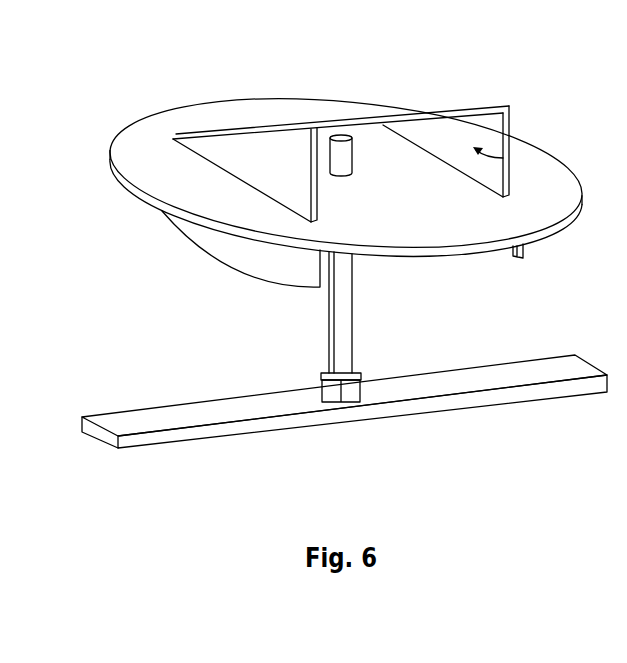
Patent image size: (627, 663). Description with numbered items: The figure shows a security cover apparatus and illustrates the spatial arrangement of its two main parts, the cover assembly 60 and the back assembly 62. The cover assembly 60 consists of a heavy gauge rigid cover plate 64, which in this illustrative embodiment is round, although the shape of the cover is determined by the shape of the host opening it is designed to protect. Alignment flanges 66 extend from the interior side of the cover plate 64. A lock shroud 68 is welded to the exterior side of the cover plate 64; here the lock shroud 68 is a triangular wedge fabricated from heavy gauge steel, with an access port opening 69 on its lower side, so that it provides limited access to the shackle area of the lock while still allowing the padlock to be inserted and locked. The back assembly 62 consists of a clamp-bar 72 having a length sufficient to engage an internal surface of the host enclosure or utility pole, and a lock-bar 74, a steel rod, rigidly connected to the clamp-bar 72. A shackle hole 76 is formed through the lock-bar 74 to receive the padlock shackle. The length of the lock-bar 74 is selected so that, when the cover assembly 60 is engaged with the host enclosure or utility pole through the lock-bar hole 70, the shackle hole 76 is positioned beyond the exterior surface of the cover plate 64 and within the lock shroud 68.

The cover assembly 60 is at (331, 248).
The back assembly 62 is at (130, 267).
The cover plate 64 is at (572, 171).
The alignment flanges 66 is at (272, 280).
The lock shroud 68 is at (507, 106).
The access port opening 69 is at (503, 158).
The lock-bar hole 70 is at (352, 172).
The clamp-bar 72 is at (458, 368).
The lock-bar 74 is at (355, 338).
The shackle hole 76 is at (333, 150).